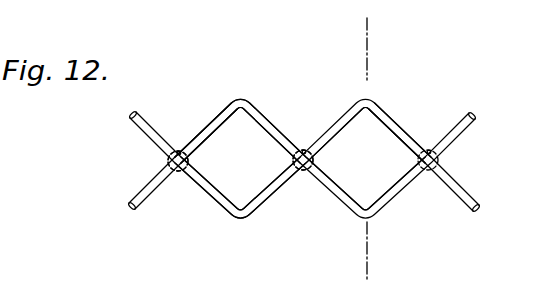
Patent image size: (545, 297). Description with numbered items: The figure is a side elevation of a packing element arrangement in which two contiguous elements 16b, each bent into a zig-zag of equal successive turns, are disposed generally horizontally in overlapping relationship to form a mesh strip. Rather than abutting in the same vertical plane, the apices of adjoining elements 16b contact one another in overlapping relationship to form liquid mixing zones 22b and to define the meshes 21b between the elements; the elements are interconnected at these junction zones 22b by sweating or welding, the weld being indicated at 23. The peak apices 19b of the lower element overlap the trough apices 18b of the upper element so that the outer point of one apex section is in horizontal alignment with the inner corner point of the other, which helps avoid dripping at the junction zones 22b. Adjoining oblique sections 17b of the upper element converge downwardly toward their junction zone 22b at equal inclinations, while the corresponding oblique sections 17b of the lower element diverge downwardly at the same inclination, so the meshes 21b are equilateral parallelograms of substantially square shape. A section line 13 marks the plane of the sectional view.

The section line 13- 13 is at (369, 46).
The element 16b is at (268, 116).
The oblique section 17b is at (201, 137).
The trough apex 18b is at (167, 162).
The peak apex 19b is at (192, 161).
The mesh 21b is at (233, 133).
The junction zone 22b is at (180, 172).
The weld 23 is at (307, 152).